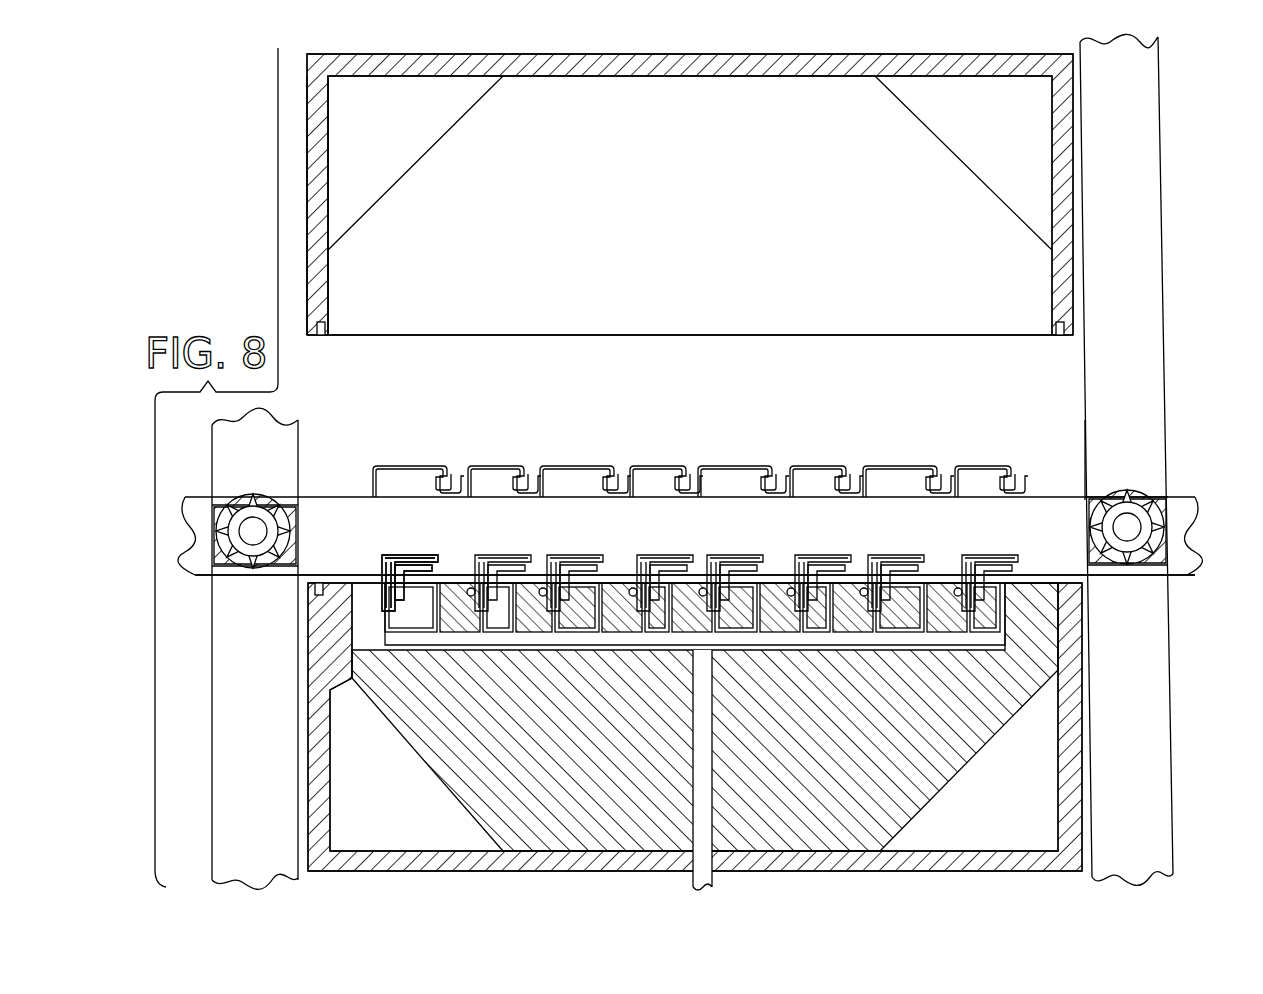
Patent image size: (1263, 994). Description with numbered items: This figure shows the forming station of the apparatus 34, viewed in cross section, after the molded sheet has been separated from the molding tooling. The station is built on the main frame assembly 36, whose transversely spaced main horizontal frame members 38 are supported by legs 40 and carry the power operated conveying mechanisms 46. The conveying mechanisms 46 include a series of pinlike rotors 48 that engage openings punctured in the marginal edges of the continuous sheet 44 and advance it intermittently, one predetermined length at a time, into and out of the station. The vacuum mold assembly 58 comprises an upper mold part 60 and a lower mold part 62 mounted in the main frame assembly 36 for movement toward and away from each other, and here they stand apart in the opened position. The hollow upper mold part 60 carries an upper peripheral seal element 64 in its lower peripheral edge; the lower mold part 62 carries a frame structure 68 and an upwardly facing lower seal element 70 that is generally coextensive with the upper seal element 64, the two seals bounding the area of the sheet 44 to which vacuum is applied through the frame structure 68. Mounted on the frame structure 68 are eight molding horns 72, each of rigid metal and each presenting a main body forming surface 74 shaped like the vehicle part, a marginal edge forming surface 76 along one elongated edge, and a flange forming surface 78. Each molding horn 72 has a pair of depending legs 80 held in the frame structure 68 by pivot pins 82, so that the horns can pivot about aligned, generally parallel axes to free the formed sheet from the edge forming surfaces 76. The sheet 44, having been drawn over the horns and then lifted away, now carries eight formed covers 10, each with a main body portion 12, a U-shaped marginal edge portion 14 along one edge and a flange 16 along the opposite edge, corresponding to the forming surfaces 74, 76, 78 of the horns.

The cover 10 is at (550, 460).
The main body portion 12 is at (647, 465).
The elongated marginal edge portion 14 is at (695, 462).
The flange 16 is at (955, 465).
The apparatus 34 is at (1178, 132).
The main frame assembly 36 is at (1170, 458).
The main horizontal frame members 38 is at (200, 545).
The legs 40 is at (250, 690).
The continuous roll of thermoplastic material 44 is at (352, 495).
The conveying mechanisms 46 is at (250, 492).
The pinlike rotors 48 is at (275, 540).
The vacuum mold assembly 58 is at (297, 152).
The upper mold part 60 is at (316, 252).
The lower mold part 62 is at (320, 718).
The upper peripheral seal element 64 is at (333, 330).
The frame structure 68 is at (443, 762).
The lower seal element 70 is at (320, 596).
The molding horns 72 is at (383, 572).
The main body forming surface 74 is at (437, 553).
The marginal edge forming surface 76 is at (602, 560).
The flange forming surface 78 is at (522, 565).
The depending legs 80 is at (855, 568).
The pivot pins 82 is at (697, 566).